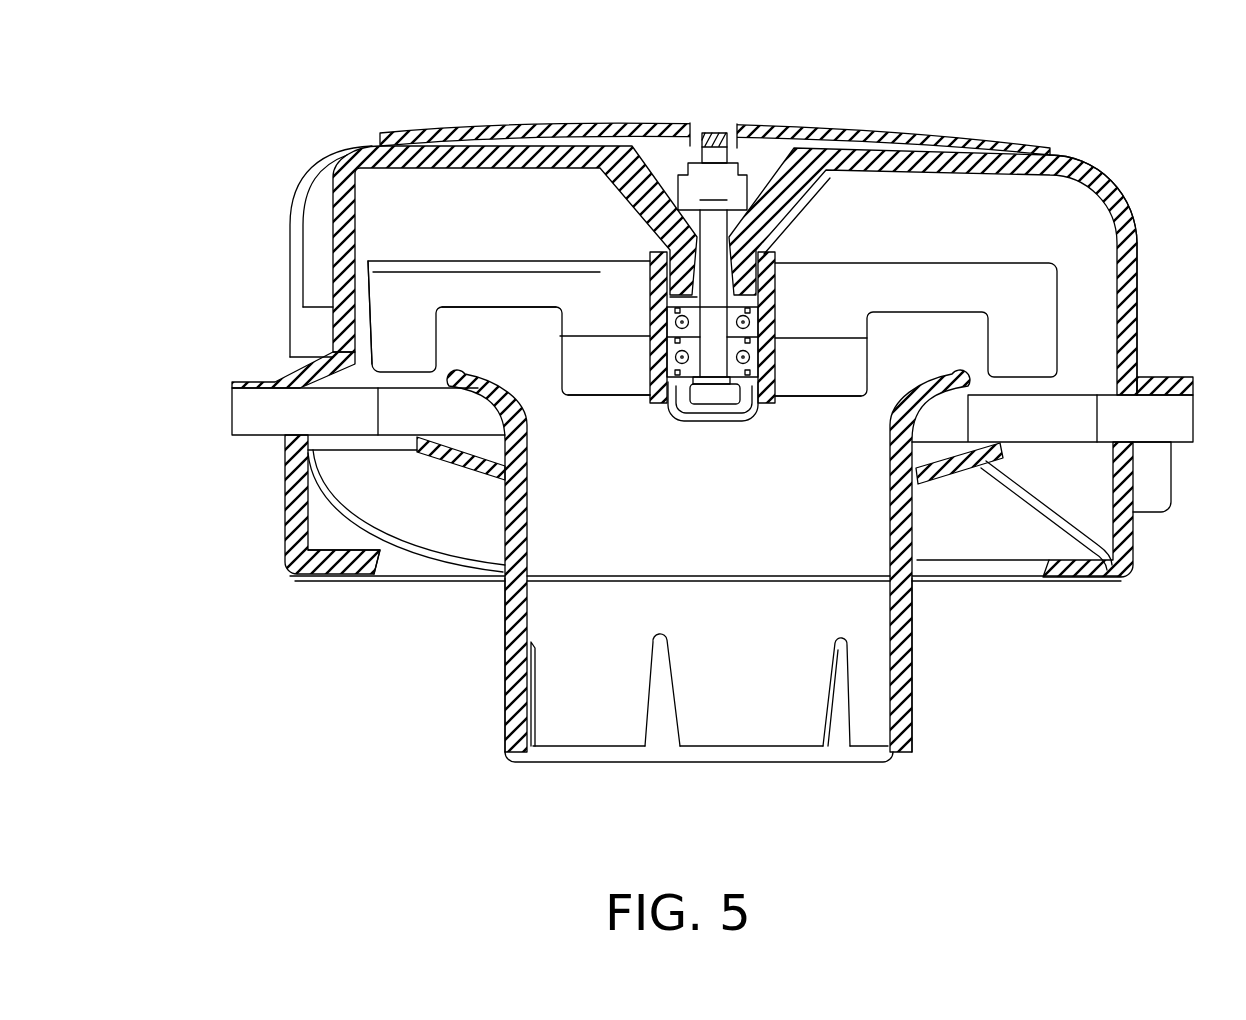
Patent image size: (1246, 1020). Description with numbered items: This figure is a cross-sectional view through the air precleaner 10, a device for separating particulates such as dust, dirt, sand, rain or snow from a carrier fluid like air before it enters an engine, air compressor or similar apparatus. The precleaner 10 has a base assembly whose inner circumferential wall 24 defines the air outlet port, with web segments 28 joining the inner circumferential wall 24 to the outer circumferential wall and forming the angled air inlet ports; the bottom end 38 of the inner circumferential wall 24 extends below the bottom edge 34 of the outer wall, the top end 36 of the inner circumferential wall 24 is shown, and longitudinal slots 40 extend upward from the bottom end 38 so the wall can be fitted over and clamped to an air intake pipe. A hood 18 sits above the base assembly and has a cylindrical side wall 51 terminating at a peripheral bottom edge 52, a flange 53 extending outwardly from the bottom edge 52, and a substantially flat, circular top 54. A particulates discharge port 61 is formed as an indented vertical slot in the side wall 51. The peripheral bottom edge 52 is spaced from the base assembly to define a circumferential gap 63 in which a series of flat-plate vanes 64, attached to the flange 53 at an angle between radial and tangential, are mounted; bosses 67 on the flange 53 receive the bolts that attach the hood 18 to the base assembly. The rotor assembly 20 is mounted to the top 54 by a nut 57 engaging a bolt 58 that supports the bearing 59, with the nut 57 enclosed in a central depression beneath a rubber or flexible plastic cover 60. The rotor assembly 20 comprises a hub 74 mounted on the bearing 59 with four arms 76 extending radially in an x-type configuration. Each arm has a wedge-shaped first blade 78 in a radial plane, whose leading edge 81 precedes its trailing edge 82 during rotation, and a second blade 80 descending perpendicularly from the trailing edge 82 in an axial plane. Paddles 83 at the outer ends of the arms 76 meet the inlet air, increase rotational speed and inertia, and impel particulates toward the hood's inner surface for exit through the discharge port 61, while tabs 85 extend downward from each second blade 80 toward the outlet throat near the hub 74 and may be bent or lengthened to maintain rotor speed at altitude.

The air precleaner 10 is at (328, 119).
The hood 18 is at (1133, 213).
The rotor assembly 20 is at (949, 260).
The inner circumferential wall 24 is at (912, 700).
The web segments 28 is at (440, 530).
The bottom edge 34 is at (357, 578).
The top end 36 is at (953, 372).
The bottom end 38 is at (557, 762).
The longitudinal slots 40 is at (662, 725).
The cylindrical side wall 51 is at (1137, 267).
The peripheral bottom edge 52 is at (307, 382).
The flange 53 is at (252, 380).
The top 54 is at (1090, 163).
The nut 57 is at (683, 183).
The bolt 58 is at (710, 157).
The bearing 59 is at (757, 323).
The cover 60 is at (817, 127).
The particulates discharge port 61 is at (310, 237).
The circumferential gap 63 is at (277, 420).
The vanes 64 is at (240, 415).
The bosses 67 is at (1157, 517).
The hub 74 is at (650, 372).
The arms 76 is at (463, 287).
The first blade 78 is at (410, 258).
The second blade 80 is at (510, 307).
The leading edge 81 is at (567, 261).
The trailing edge 82 is at (877, 262).
The paddles 83 is at (393, 330).
The tab 85 is at (593, 395).